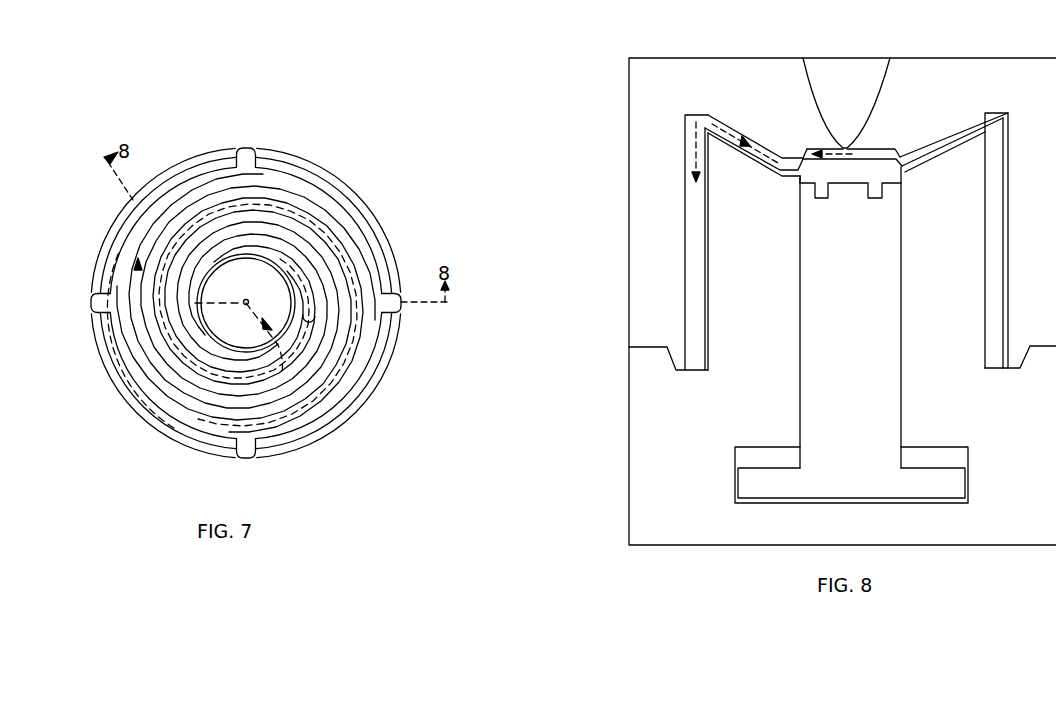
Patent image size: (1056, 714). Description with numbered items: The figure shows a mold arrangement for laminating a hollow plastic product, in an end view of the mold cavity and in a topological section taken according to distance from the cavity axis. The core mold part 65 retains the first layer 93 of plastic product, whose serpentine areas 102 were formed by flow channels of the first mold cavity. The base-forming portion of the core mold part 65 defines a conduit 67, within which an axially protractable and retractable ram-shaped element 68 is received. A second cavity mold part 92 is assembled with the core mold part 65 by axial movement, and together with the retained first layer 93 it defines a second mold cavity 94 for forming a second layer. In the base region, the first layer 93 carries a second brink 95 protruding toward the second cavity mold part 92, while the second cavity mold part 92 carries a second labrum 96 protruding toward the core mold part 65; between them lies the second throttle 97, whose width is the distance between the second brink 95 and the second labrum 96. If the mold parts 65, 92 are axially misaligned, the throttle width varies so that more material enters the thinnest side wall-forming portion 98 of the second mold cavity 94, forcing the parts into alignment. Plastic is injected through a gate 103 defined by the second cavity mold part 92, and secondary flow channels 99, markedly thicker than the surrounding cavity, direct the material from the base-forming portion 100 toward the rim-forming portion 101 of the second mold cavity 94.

In FIG. 8, the core mold part 65 is at (632, 385).
In FIG. 8, the conduit 67 is at (894, 378).
In FIG. 8, the ram-shaped element 68 is at (890, 298).
In FIG. 8, the second cavity mold part 92 is at (632, 196).
In FIG. 7, the first layer 93 is at (372, 372).
In FIG. 8, the first layer 93 is at (705, 205).
In FIG. 7, the second mold cavity 94 is at (157, 428).
In FIG. 8, the second mold cavity 94 is at (690, 228).
In FIG. 7, the second brink 95 is at (222, 262).
In FIG. 8, the second brink 95 is at (805, 168).
In FIG. 7, the second labrum 96 is at (278, 268).
In FIG. 8, the second labrum 96 is at (797, 158).
In FIG. 7, the second throttle 97 is at (292, 278).
In FIG. 8, the second throttle 97 is at (806, 148).
In FIG. 7, the side wall-forming portion 98 is at (246, 459).
In FIG. 7, the secondary flow channels 99 is at (338, 425).
In FIG. 8, the secondary flow channels 99 is at (690, 260).
In FIG. 7, the base-forming portion 100 is at (338, 190).
In FIG. 8, the base-forming portion 100 is at (878, 153).
In FIG. 8, the rim-forming portion 101 is at (700, 367).
In FIG. 7, the serpentine areas 102 is at (258, 177).
In FIG. 8, the serpentine areas 102 is at (933, 160).
In FIG. 7, the gate 103 is at (249, 302).
In FIG. 8, the gate 103 is at (845, 146).